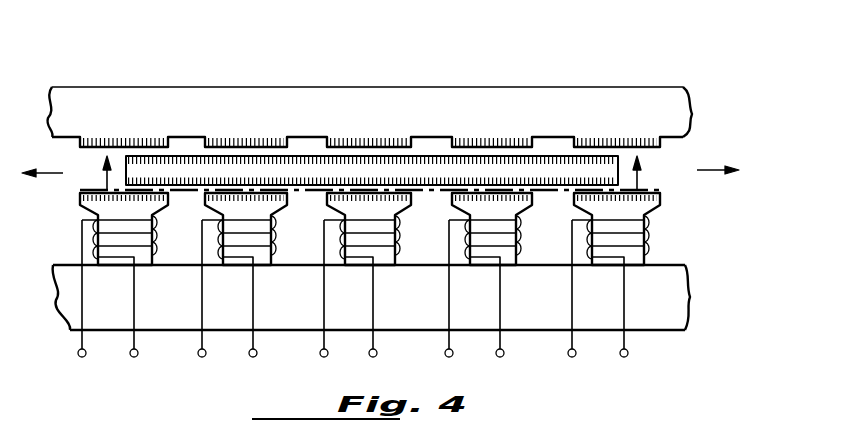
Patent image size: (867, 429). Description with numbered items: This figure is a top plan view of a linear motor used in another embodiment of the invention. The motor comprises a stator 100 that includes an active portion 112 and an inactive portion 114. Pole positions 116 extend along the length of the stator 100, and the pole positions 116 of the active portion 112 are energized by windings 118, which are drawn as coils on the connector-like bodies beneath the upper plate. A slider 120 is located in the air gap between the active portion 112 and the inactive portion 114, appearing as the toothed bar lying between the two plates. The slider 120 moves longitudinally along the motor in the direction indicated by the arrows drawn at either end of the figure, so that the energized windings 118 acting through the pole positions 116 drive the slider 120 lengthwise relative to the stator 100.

The stator 100 is at (662, 67).
The active portion 112 is at (526, 93).
The inactive portion 114 is at (673, 303).
The pole positions 116 is at (146, 76).
The windings 118 is at (140, 253).
The slider 120 is at (304, 156).